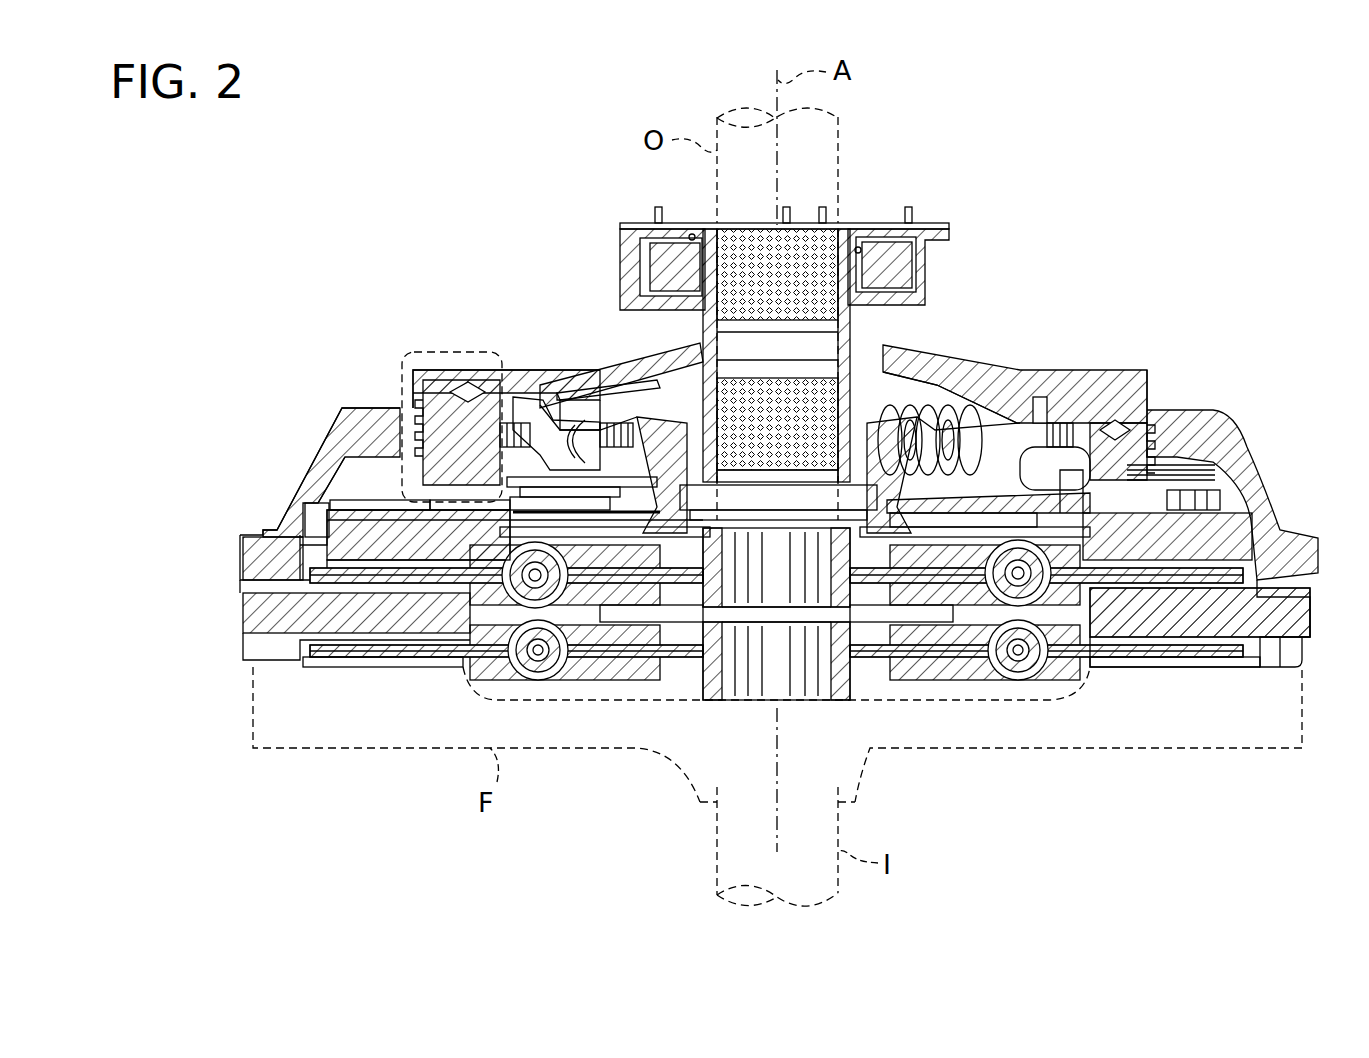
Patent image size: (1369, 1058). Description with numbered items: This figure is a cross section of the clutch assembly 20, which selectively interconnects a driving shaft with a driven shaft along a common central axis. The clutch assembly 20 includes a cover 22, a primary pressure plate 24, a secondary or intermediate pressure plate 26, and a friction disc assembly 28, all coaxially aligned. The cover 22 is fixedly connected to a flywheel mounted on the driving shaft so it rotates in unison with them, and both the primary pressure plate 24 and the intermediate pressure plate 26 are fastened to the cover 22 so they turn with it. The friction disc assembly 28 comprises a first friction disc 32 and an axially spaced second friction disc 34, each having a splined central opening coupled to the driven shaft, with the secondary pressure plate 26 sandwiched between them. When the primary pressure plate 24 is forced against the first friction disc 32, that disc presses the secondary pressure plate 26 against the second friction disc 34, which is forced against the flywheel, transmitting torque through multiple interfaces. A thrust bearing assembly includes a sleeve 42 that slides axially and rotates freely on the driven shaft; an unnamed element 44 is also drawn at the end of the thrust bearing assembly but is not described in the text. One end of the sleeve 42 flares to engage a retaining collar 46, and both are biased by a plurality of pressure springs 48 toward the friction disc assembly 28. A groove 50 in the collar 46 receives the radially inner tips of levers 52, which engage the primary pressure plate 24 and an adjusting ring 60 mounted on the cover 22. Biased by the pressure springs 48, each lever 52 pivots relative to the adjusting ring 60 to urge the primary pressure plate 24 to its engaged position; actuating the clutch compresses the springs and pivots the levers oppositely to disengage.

The clutch assembly 20 is at (1293, 366).
The cover 22 is at (1262, 478).
The primary pressure plate 24 is at (367, 500).
The secondary or intermediate pressure plate 26 is at (250, 642).
The friction disc assembly 28 is at (858, 698).
The first friction disc 32 is at (357, 557).
The second friction disc 34 is at (1160, 667).
The sleeve 42 is at (850, 332).
The end plate 44 is at (606, 228).
The retaining collar 46 is at (672, 395).
The pressure springs 48 is at (927, 427).
The groove 50 is at (556, 425).
The levers 52 is at (1030, 470).
The adjusting ring 60 is at (422, 432).